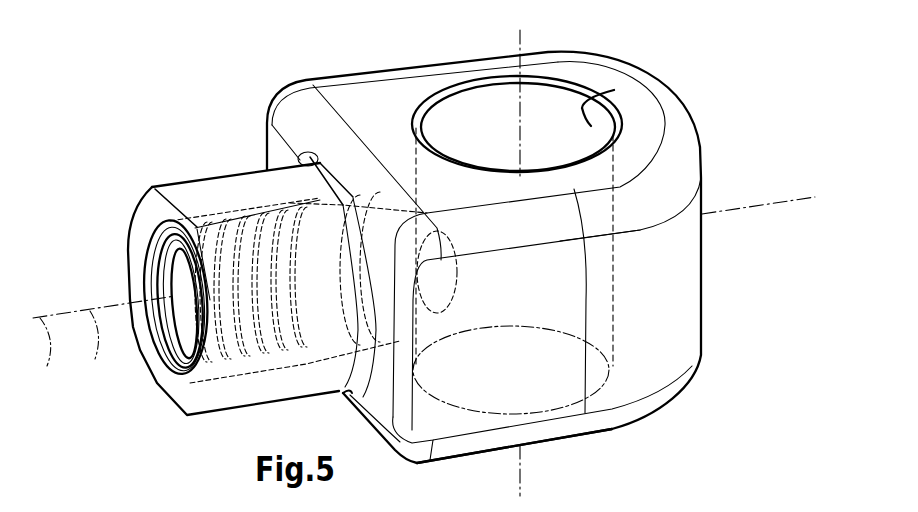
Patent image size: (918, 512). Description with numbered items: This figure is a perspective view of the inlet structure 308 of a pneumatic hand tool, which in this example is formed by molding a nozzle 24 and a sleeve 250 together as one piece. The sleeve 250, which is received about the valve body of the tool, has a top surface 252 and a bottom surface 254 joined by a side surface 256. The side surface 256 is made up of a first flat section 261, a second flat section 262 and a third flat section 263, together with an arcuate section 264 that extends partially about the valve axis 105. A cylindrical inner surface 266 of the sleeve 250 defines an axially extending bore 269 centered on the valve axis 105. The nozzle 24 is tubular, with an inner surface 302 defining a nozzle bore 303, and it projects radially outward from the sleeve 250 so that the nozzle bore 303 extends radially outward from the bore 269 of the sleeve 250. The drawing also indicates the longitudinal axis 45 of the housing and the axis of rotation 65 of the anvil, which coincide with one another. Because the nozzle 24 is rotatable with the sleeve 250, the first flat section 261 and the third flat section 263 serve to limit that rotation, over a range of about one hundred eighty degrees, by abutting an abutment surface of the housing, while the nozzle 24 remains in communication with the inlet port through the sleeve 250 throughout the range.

The nozzle 24 is at (223, 173).
The longitudinal axis 45 is at (89, 345).
The axis of rotation 65 is at (39, 355).
The valve axis 105 is at (519, 33).
The sleeve 250 is at (316, 71).
The top surface 252 is at (638, 108).
The bottom surface 254 is at (622, 428).
The side surface 256 is at (704, 240).
The first flat section 261 is at (370, 68).
The second flat section 262 is at (378, 400).
The third flat section 263 is at (457, 417).
The arcuate section 264 is at (682, 286).
The cylindrical inner surface 266 is at (590, 115).
The bore 269 is at (542, 90).
The inner surface 302 is at (162, 251).
The nozzle bore 303 is at (150, 281).
The inlet structure 308 is at (718, 94).